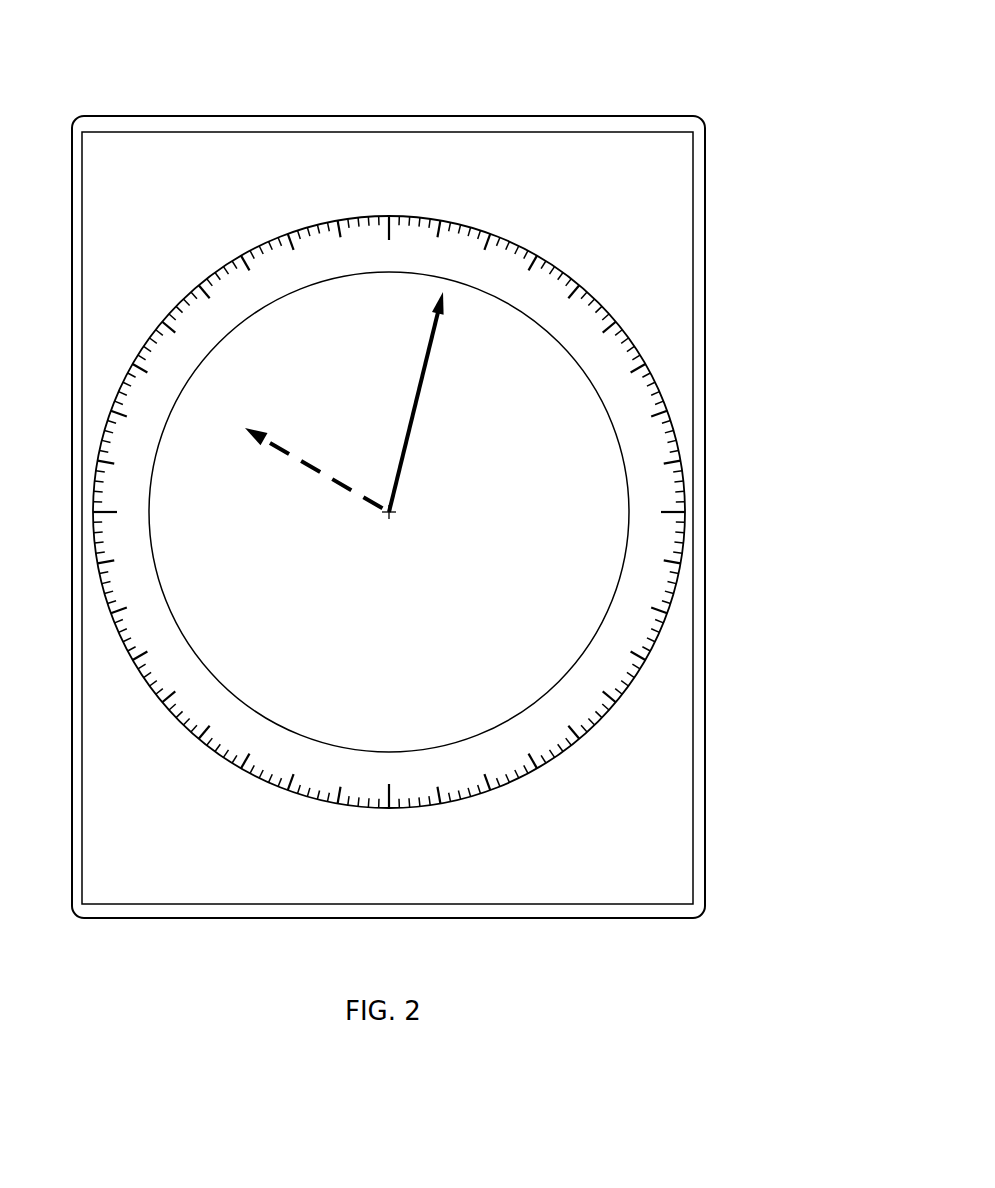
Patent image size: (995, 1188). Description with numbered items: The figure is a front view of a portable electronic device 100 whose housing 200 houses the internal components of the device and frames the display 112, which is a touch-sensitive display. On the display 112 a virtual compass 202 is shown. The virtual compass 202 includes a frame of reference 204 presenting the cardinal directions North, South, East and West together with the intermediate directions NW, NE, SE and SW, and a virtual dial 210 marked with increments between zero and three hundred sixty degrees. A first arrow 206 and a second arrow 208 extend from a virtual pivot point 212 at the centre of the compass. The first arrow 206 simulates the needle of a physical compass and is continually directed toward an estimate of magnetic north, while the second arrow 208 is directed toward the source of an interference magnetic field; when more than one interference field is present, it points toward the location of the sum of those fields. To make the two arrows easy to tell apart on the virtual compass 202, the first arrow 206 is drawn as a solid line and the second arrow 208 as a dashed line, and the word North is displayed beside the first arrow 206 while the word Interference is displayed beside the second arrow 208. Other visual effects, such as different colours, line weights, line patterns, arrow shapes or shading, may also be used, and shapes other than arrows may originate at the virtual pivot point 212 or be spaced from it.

The portable electronic device 100 is at (192, 108).
The display 112 is at (205, 878).
The housing 200 is at (563, 116).
The virtual compass 202 is at (148, 340).
The frame of reference 204 is at (638, 417).
The first arrow 206 is at (418, 392).
The second arrow 208 is at (292, 457).
The virtual dial 210 is at (667, 602).
The virtual pivot point 212 is at (389, 512).